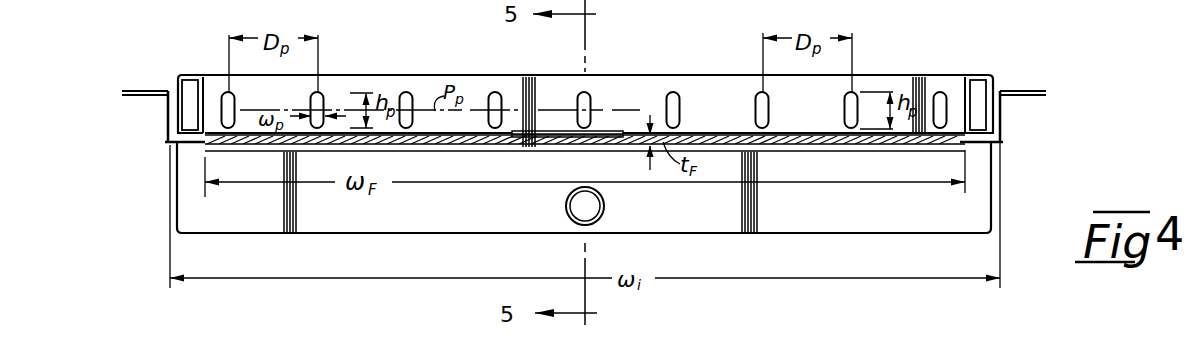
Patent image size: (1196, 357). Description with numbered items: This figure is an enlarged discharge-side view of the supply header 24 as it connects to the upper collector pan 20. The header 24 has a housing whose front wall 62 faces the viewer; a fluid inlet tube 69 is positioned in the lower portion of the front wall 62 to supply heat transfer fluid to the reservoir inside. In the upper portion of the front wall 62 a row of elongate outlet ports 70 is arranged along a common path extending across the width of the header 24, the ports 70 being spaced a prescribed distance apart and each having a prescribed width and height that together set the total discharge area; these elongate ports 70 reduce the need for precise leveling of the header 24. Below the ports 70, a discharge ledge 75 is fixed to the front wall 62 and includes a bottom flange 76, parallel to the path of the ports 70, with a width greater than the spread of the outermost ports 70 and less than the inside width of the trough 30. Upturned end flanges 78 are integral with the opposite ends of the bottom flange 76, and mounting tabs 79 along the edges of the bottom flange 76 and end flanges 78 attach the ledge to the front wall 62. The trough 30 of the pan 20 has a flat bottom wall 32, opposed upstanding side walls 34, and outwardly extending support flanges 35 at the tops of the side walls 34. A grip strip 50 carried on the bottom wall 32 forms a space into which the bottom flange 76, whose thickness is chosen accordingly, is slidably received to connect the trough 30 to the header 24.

The collector pan 20 is at (160, 151).
The supply header 24 is at (918, 50).
The trough 30 is at (1014, 146).
The bottom wall 32 is at (440, 143).
The side walls 34 is at (163, 124).
The support flanges 35 is at (142, 95).
The grip strip 50 is at (507, 143).
The front wall 62 is at (827, 221).
The fluid inlet tube 69 is at (605, 208).
The outlet ports 70 is at (314, 97).
The discharge ledge 75 is at (803, 134).
The bottom flange 76 is at (825, 138).
The end flanges 78 is at (215, 60).
The mounting tabs 79 is at (187, 92).